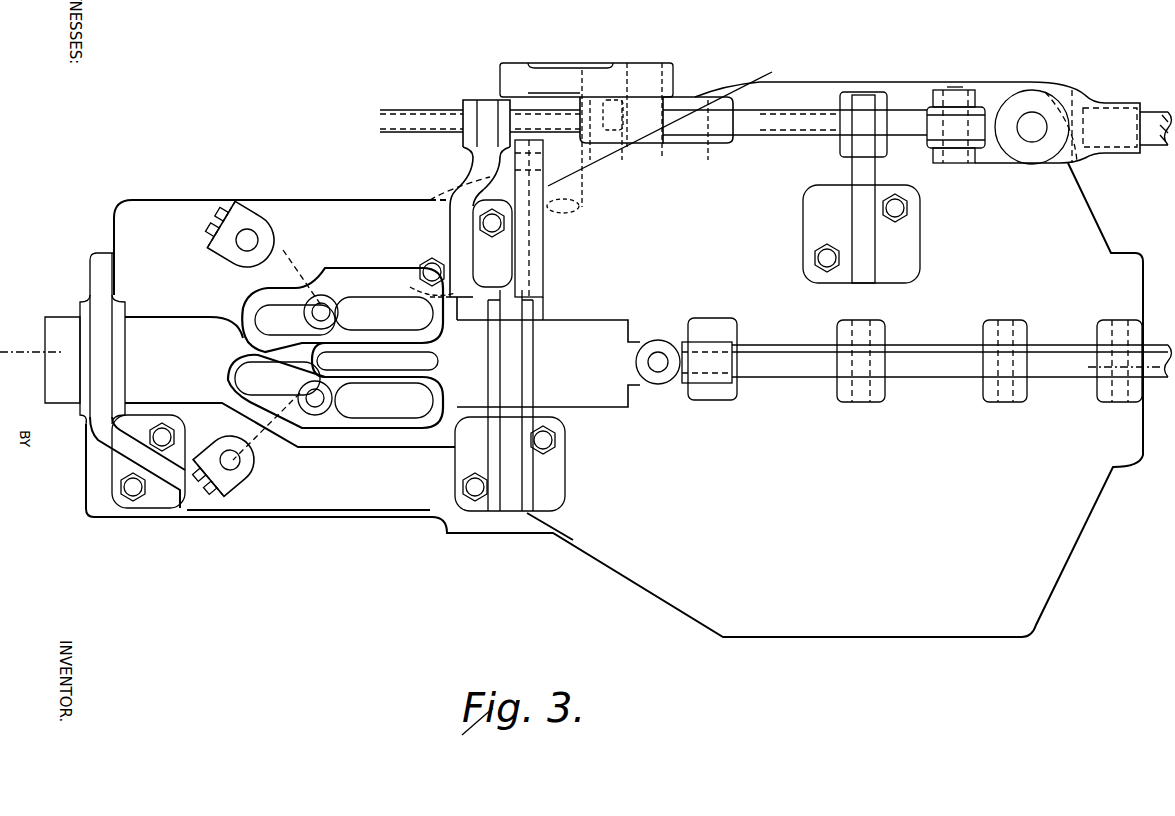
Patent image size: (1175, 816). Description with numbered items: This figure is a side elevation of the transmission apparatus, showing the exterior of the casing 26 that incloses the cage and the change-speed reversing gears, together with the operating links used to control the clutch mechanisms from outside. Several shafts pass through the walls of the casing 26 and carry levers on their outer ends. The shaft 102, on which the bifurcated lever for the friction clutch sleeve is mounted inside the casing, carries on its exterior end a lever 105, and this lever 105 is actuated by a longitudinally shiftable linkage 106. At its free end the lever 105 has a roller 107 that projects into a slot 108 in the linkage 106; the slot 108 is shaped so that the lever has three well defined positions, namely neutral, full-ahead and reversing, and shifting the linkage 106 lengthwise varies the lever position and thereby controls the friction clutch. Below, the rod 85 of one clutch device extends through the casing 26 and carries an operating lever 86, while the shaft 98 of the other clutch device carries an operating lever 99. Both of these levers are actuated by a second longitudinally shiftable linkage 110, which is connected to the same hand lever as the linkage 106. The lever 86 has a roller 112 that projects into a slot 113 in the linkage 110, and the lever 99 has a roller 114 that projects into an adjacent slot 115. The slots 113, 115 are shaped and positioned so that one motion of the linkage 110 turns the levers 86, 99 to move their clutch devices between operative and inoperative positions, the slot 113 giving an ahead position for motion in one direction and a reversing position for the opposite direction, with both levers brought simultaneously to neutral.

The casing 26 is at (583, 368).
The rod 85 is at (234, 471).
The operating lever 86 is at (270, 440).
The shaft 98 is at (250, 235).
The operating lever 99 is at (283, 253).
The shaft 102 is at (565, 42).
The lever 105 is at (597, 80).
The linkage 106 is at (778, 123).
The roller 107 is at (653, 147).
The slot 108 is at (708, 160).
The linkage 110 is at (814, 362).
The roller 112 is at (335, 402).
The slot 113 is at (248, 372).
The roller 114 is at (336, 302).
The slot 115 is at (265, 315).